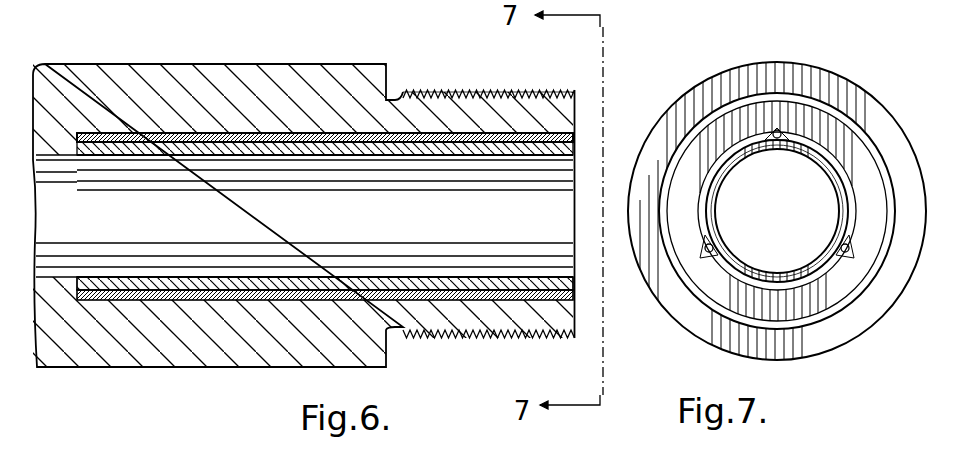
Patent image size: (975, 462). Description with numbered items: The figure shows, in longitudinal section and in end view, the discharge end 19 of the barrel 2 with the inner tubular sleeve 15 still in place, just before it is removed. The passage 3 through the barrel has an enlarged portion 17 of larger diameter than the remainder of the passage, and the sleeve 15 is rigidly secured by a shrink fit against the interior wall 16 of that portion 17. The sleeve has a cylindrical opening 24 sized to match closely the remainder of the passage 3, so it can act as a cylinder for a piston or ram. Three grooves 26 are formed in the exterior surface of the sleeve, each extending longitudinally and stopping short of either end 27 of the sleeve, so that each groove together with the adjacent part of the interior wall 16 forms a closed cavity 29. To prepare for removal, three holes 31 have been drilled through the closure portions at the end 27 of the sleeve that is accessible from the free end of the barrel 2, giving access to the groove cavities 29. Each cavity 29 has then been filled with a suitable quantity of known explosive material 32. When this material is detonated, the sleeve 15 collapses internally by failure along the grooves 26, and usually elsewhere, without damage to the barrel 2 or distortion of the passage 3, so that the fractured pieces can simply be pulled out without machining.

In FIG. 6, the barrel 2 is at (262, 60).
In FIG. 7, the barrel 2 is at (648, 127).
In FIG. 6, the passage 3 is at (50, 160).
In FIG. 6, the inner tubular sleeve 15 is at (228, 290).
In FIG. 7, the inner tubular sleeve 15 is at (720, 142).
In FIG. 6, the interior wall 16 is at (115, 133).
In FIG. 7, the interior wall 16 is at (818, 272).
In FIG. 6, the portion of passage 17 is at (184, 285).
In FIG. 6, the discharge end 19 is at (132, 80).
In FIG. 7, the discharge end 19 is at (820, 118).
In FIG. 6, the cylindrical opening 24 is at (336, 268).
In FIG. 6, the grooves 26 is at (348, 133).
In FIG. 7, the grooves 26 is at (842, 227).
In FIG. 7, the end of the sleeve 27 is at (833, 166).
In FIG. 6, the groove cavity 29 is at (205, 133).
In FIG. 6, the holes 31 is at (576, 136).
In FIG. 7, the holes 31 is at (778, 130).
In FIG. 6, the explosive material 32 is at (450, 133).